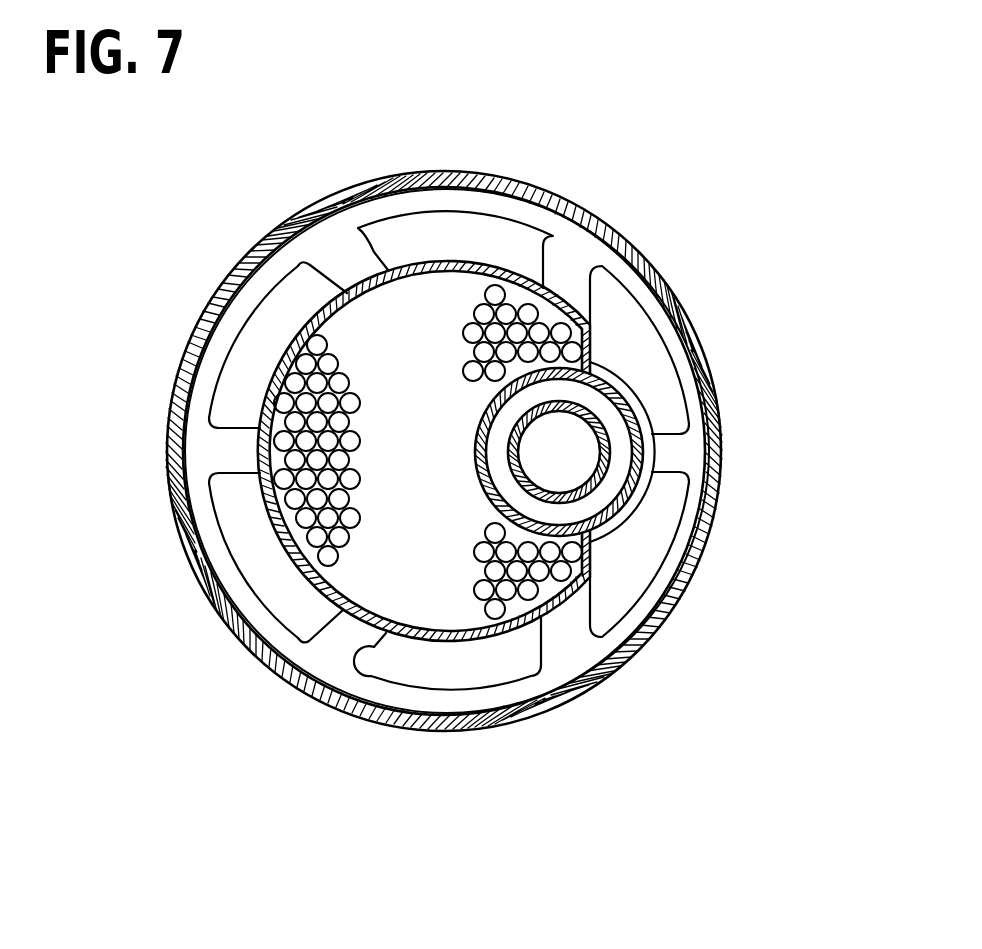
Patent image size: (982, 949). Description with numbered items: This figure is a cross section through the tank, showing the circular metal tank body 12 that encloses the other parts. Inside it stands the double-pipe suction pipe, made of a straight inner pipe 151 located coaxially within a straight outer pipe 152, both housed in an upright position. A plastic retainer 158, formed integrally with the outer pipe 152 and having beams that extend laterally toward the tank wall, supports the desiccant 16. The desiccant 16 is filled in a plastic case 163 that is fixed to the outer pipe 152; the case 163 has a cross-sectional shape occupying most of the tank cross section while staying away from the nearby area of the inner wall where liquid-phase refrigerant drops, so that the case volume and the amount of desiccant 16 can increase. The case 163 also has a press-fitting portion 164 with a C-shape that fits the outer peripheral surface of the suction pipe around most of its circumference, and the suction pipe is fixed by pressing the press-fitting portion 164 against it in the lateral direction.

The tank body 12 is at (637, 252).
The desiccant 16 is at (582, 578).
The inner pipe 151 is at (597, 410).
The outer pipe 152 is at (647, 446).
The retainer 158 is at (314, 295).
The case 163 is at (505, 618).
The press-fitting portion 164 is at (487, 432).